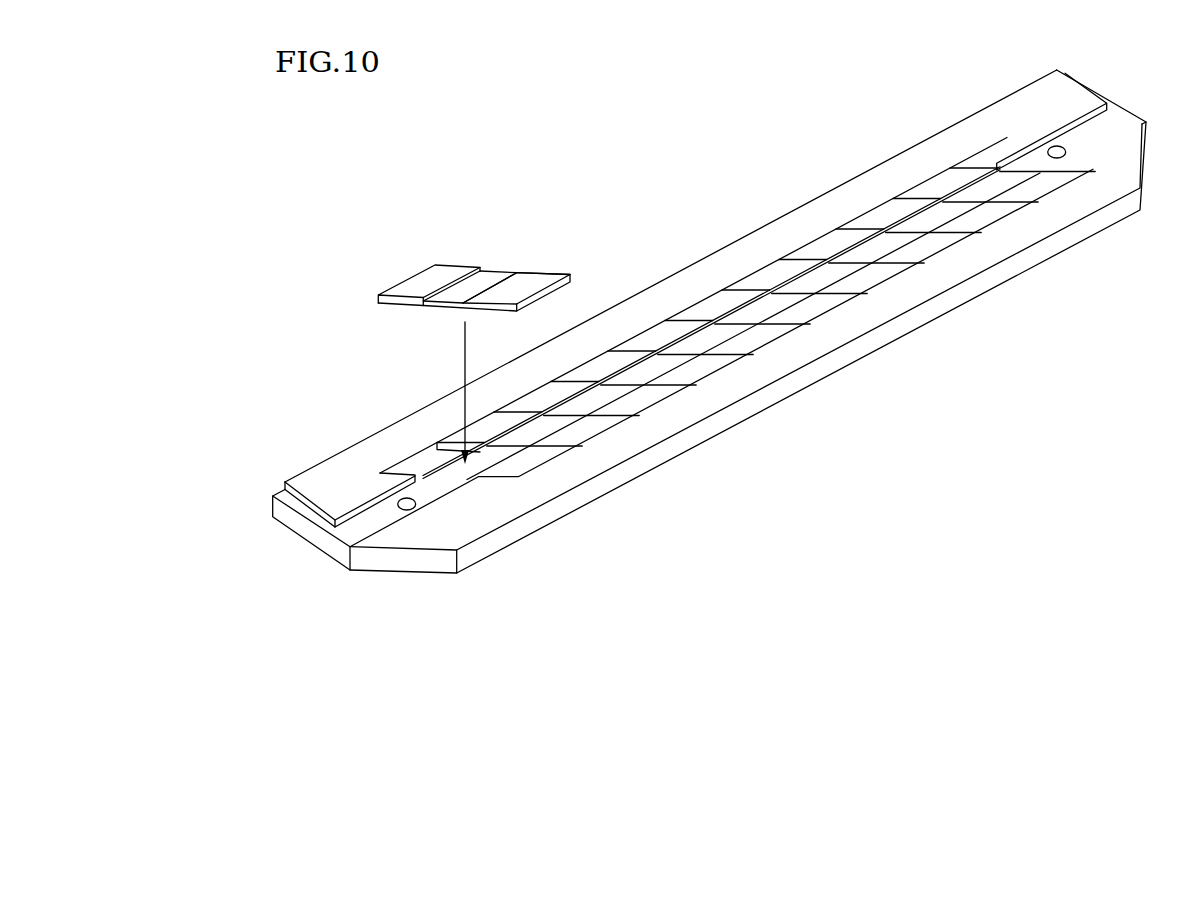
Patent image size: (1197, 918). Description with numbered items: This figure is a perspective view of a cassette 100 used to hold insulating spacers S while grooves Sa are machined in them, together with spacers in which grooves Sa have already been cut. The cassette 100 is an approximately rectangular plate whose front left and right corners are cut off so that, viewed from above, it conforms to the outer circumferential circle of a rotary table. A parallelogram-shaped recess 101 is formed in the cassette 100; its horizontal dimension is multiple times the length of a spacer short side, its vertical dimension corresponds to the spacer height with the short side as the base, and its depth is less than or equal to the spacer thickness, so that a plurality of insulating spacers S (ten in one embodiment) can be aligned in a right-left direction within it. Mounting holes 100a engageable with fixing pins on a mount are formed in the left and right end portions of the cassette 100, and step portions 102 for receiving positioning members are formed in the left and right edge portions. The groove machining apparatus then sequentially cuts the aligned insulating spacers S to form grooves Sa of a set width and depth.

The cassette 100 is at (272, 447).
The mounting holes 100a is at (413, 511).
The parallelogram-shaped recess 101 is at (430, 467).
The step portions 102 is at (297, 508).
The insulating spacers S is at (408, 280).
The grooves Sa is at (497, 279).